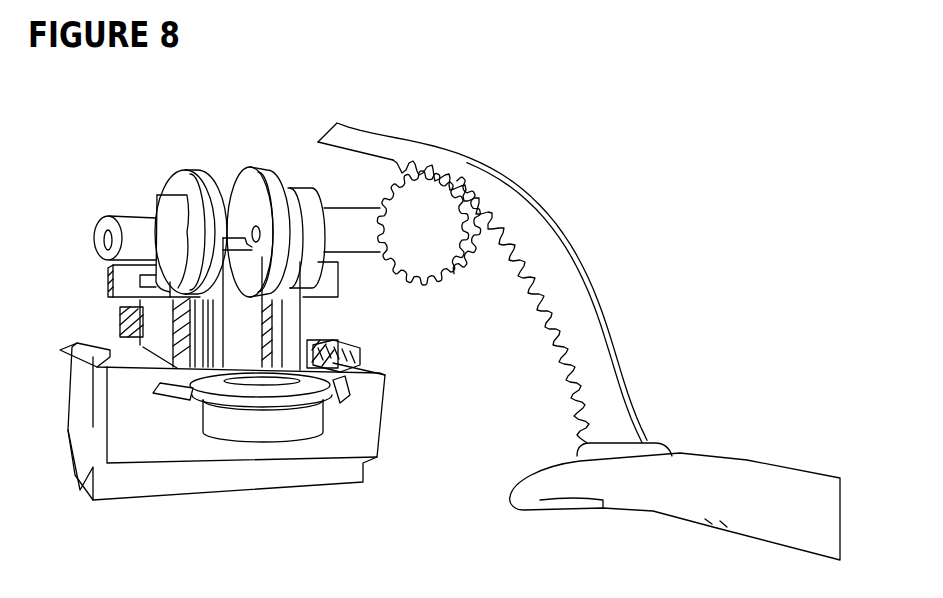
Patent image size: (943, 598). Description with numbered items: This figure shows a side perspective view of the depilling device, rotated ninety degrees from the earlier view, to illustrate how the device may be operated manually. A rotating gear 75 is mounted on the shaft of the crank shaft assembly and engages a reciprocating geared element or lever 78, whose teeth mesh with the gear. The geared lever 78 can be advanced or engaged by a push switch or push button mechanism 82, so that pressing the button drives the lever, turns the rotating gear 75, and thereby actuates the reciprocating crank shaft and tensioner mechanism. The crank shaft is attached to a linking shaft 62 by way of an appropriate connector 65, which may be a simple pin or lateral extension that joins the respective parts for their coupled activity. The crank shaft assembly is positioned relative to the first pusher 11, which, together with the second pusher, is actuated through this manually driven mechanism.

The first pusher 11 is at (222, 420).
The linking shaft 62 is at (237, 268).
The connector 65 is at (165, 350).
The rotating gear 75 is at (385, 222).
The reciprocating geared lever 78 is at (482, 283).
The push button mechanism 82 is at (628, 454).